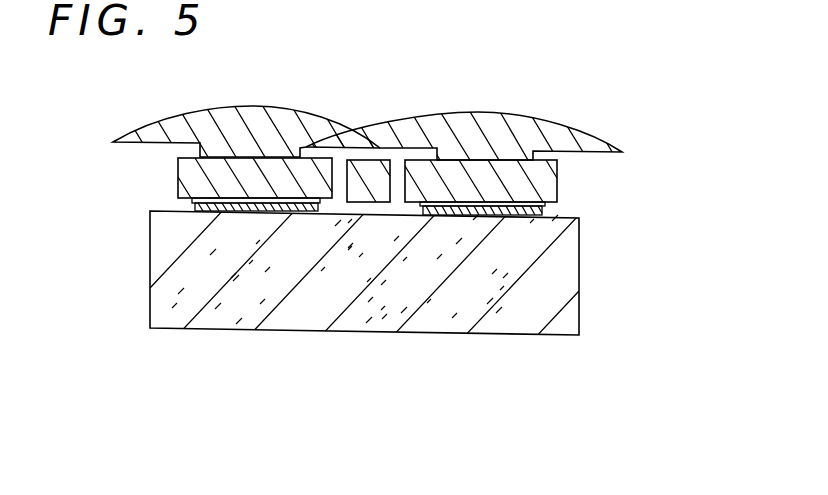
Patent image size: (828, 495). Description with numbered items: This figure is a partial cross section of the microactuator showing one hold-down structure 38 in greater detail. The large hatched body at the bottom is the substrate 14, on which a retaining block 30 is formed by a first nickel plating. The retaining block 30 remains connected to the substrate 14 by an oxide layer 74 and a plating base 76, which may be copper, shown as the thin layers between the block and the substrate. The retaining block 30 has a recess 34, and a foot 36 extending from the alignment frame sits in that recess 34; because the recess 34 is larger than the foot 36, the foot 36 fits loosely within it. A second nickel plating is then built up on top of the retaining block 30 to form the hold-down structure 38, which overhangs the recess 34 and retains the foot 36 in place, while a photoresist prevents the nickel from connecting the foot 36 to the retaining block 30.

The substrate 14 is at (578, 293).
The retaining block 30 is at (548, 183).
The recess 34 is at (340, 165).
The foot 36 is at (378, 165).
The hold-down structure 38 is at (530, 128).
The oxide layer 74 is at (192, 203).
The plating base 76 is at (198, 208).